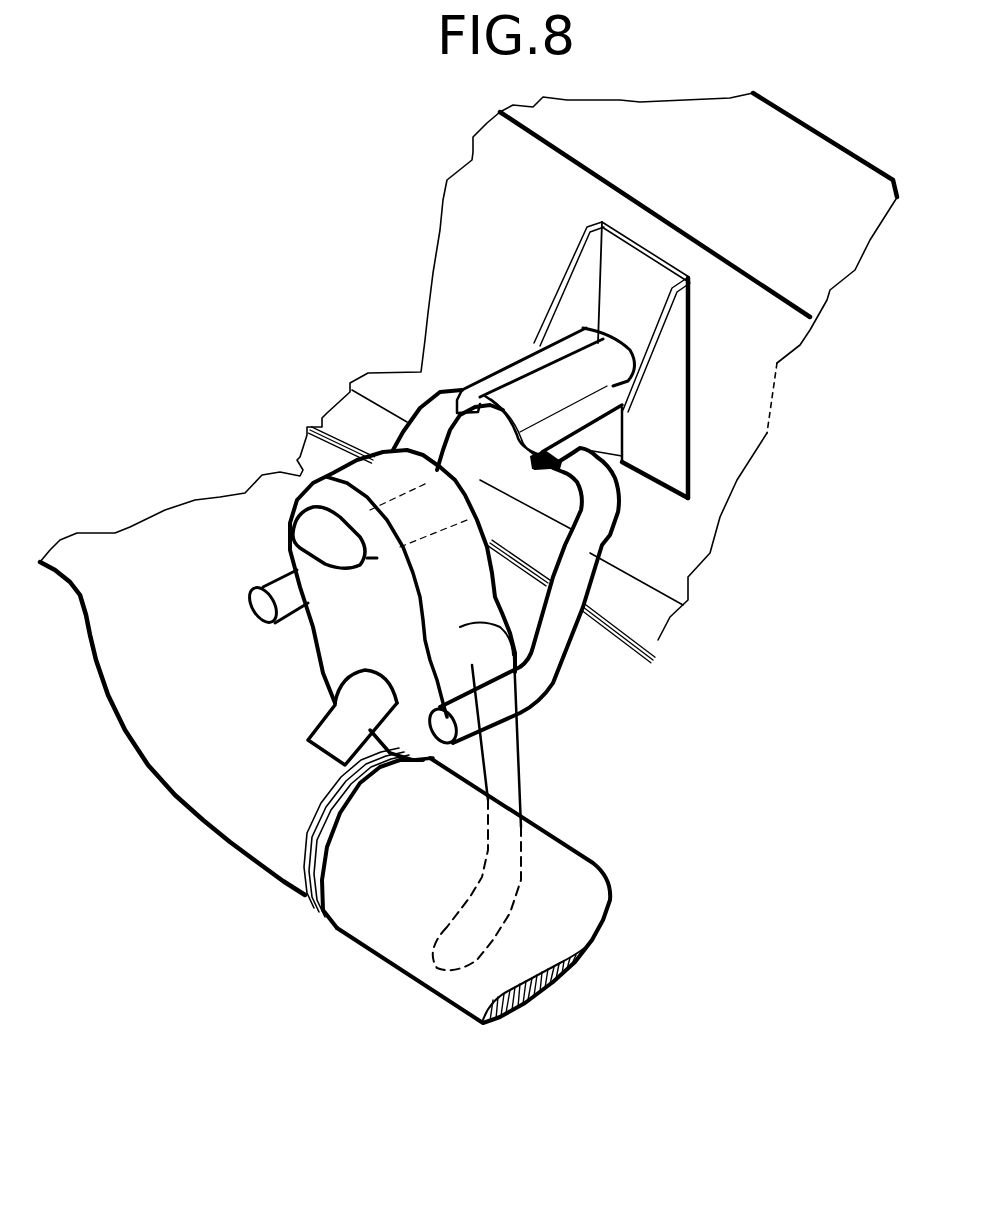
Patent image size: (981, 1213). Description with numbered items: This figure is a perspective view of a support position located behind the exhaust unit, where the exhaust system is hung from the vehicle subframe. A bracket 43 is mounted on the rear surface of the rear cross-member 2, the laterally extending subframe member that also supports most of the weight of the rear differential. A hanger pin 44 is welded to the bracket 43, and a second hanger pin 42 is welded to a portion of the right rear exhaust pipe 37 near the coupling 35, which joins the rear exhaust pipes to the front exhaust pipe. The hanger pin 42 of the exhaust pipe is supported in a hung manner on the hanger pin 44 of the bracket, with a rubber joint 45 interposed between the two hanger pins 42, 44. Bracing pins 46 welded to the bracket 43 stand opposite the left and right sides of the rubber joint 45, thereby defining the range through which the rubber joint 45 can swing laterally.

The rear cross-member 2 is at (768, 357).
The coupling 35 is at (230, 830).
The right rear exhaust pipe 37 is at (593, 870).
The hanger pin 42 is at (507, 758).
The bracket 43 is at (682, 370).
The hanger pin 44 is at (297, 530).
The rubber joint 45 is at (320, 656).
The bracing pins 46 is at (550, 663).